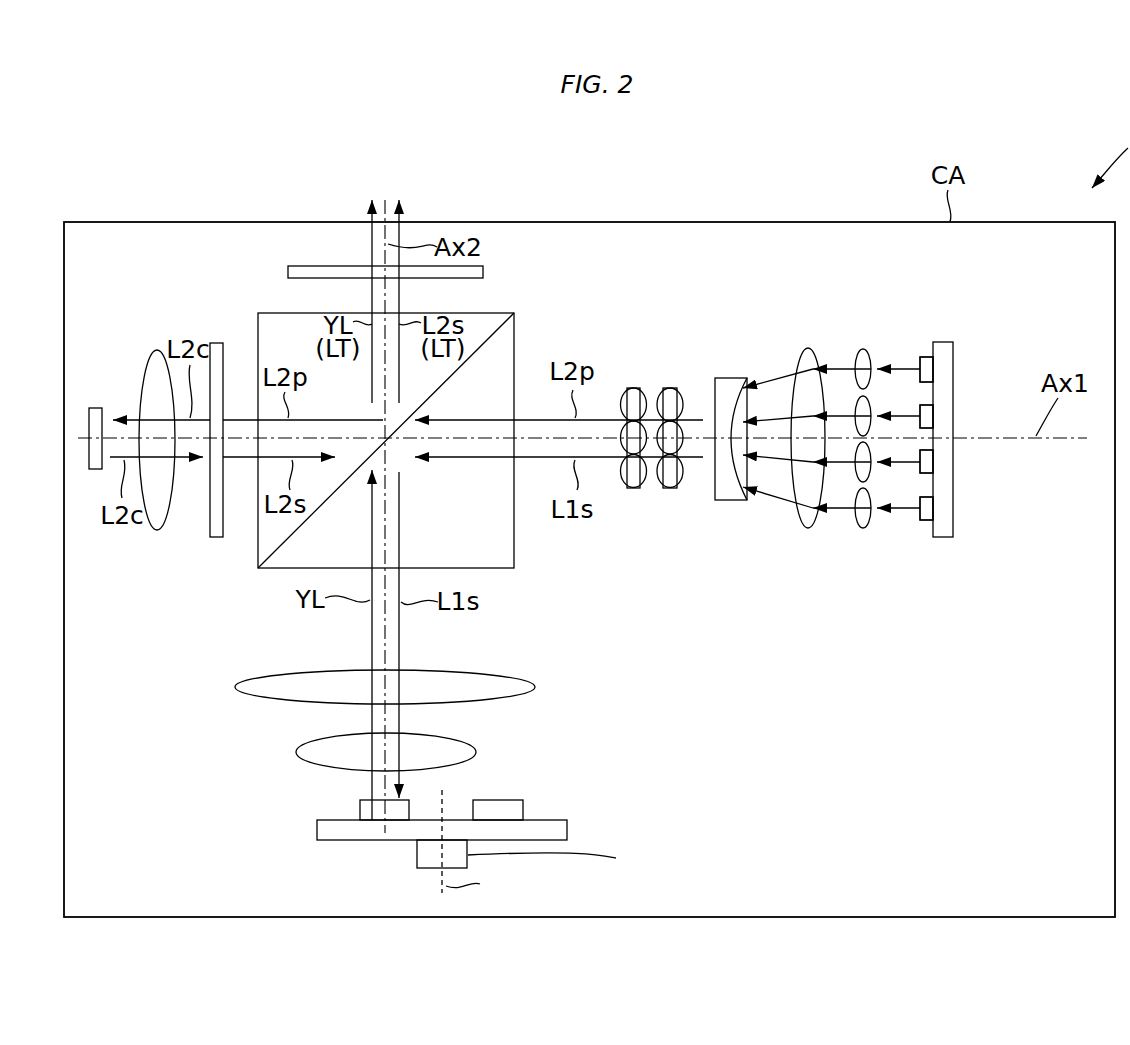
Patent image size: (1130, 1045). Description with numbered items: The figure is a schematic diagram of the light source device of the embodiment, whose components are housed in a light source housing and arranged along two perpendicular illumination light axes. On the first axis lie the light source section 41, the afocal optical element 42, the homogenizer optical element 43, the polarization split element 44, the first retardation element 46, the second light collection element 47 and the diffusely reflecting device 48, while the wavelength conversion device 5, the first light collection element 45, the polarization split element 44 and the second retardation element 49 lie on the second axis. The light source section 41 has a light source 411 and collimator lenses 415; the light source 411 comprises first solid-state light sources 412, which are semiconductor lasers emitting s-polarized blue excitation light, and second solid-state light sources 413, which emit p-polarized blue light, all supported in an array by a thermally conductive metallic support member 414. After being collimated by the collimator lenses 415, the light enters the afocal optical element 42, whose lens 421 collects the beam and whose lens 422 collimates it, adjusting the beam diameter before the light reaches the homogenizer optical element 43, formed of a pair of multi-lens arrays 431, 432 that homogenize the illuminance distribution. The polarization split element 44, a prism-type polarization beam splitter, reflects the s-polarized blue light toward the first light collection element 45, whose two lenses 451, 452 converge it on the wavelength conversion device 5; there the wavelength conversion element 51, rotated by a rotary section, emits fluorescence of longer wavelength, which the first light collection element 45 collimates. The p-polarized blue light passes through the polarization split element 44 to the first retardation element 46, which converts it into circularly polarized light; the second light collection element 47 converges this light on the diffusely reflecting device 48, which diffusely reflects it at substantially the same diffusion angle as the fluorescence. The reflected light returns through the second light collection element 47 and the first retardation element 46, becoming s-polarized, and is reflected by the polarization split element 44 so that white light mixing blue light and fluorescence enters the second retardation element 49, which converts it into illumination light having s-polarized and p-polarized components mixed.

The wavelength conversion device 5 is at (498, 845).
The light source section 41 is at (913, 492).
The afocal optical element 42 is at (769, 498).
The homogenizer optical element 43 is at (651, 497).
The polarization split element 44 is at (515, 318).
The first light collection element 45 is at (438, 725).
The first retardation element 46 is at (217, 540).
The second light collection element 47 is at (156, 532).
The diffusely reflecting device 48 is at (97, 470).
The second retardation element 49 is at (484, 271).
The wavelength conversion element 51 is at (568, 830).
The light source 411 is at (943, 540).
The first solid-state light source 412 is at (930, 462).
The second solid-state light source 413 is at (930, 369).
The support member 414 is at (945, 342).
The collimator lens 415 is at (863, 545).
The lens 421 is at (808, 478).
The lens 422 is at (737, 503).
The multi-lens array 431 is at (671, 490).
The multi-lens array 432 is at (633, 490).
The lens 451 is at (520, 695).
The lens 452 is at (476, 752).